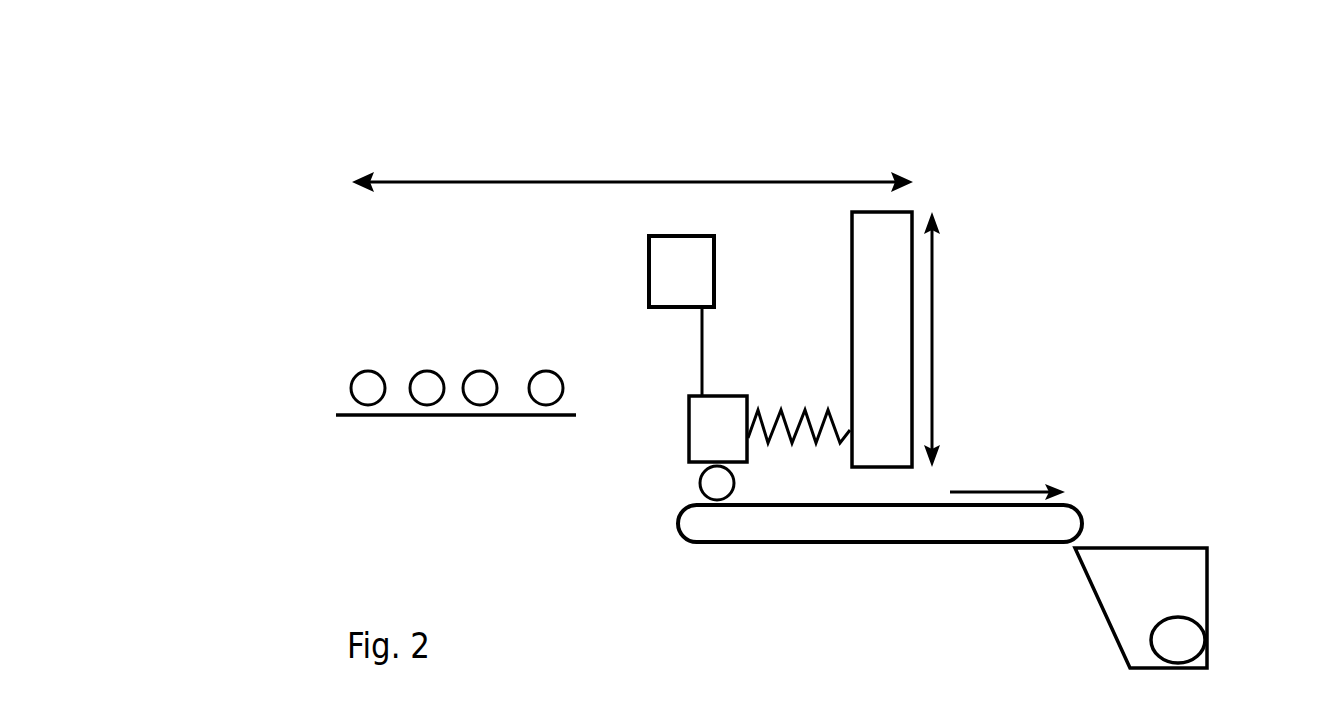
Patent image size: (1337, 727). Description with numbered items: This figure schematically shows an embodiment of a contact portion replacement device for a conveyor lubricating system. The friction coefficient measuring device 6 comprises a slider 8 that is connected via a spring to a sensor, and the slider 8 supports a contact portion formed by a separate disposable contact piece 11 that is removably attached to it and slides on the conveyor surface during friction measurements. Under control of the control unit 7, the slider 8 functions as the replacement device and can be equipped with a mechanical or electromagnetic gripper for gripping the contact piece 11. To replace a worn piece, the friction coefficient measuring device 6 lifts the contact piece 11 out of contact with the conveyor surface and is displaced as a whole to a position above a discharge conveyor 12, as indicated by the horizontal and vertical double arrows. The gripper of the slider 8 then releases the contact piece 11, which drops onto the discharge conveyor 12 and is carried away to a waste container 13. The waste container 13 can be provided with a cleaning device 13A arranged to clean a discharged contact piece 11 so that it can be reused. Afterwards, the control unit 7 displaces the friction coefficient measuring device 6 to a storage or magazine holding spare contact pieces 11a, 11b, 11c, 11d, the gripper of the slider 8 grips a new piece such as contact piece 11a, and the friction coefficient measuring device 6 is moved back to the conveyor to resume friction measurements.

The friction coefficient measuring device 6 is at (992, 270).
The control unit 7 is at (706, 260).
The slider 8 is at (710, 428).
The contact piece 11 is at (702, 495).
The contact piece 11a is at (546, 386).
The contact piece 11b is at (480, 380).
The contact piece 11c is at (423, 370).
The contact piece 11d is at (367, 387).
The discharge conveyor 12 is at (865, 520).
The waste container 13 is at (1137, 562).
The cleaning device 13A is at (1193, 647).